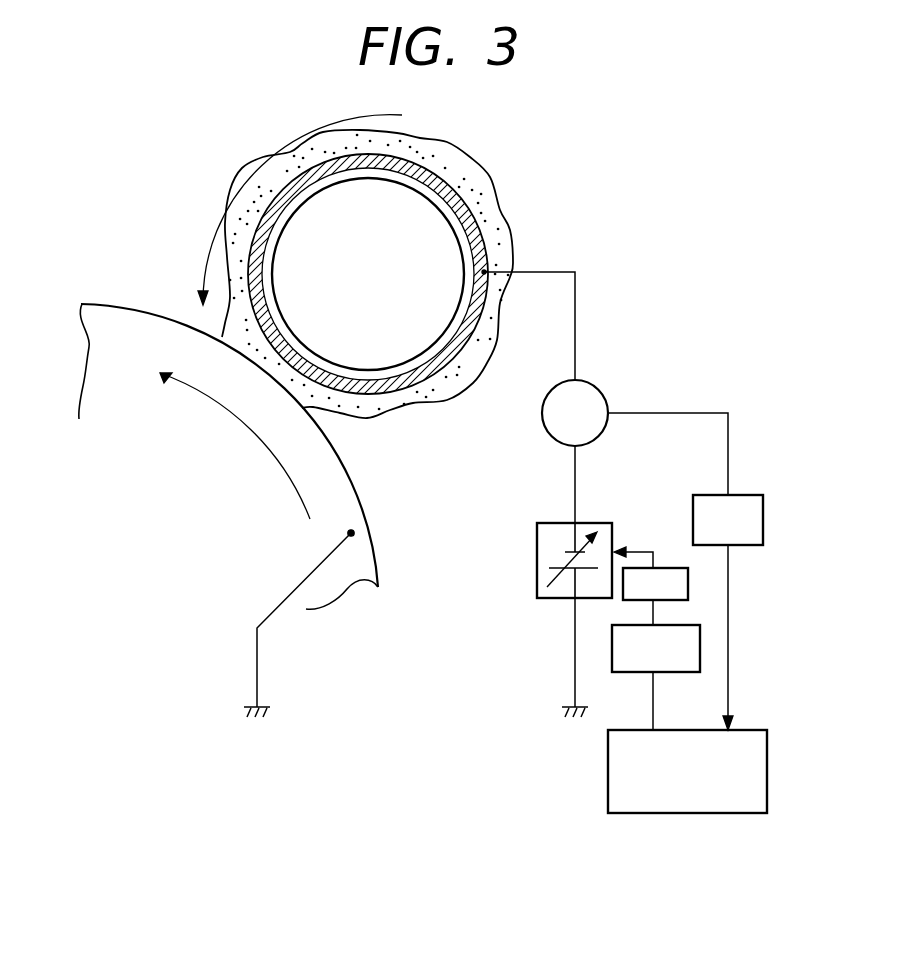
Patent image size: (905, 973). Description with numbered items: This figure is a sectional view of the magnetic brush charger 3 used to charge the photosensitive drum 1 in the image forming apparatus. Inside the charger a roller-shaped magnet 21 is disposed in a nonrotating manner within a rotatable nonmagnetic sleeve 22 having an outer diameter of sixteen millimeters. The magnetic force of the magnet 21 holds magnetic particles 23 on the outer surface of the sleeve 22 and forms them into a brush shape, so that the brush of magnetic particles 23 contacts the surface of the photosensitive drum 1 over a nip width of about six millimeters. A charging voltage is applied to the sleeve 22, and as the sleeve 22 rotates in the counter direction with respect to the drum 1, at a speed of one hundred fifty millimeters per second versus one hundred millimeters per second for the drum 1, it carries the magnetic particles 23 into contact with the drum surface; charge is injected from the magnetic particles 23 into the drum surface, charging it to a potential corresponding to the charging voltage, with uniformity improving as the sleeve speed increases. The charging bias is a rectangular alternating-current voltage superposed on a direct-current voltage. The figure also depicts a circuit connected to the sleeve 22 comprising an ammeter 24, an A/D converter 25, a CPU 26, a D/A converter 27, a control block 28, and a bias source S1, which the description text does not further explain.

The photosensitive drum 1 is at (122, 303).
The magnetic brush charger 3 is at (523, 166).
The roller-shaped magnet 21 is at (327, 192).
The nonmagnetic sleeve 22 is at (267, 213).
The magnetic particles 23 is at (233, 243).
The ammeter 24 is at (603, 392).
The A/D converter 25 is at (765, 507).
The CPU 26 is at (768, 748).
The D/A converter 27 is at (687, 674).
The bias control circuit 28 is at (672, 566).
The bias power source S1 is at (537, 533).